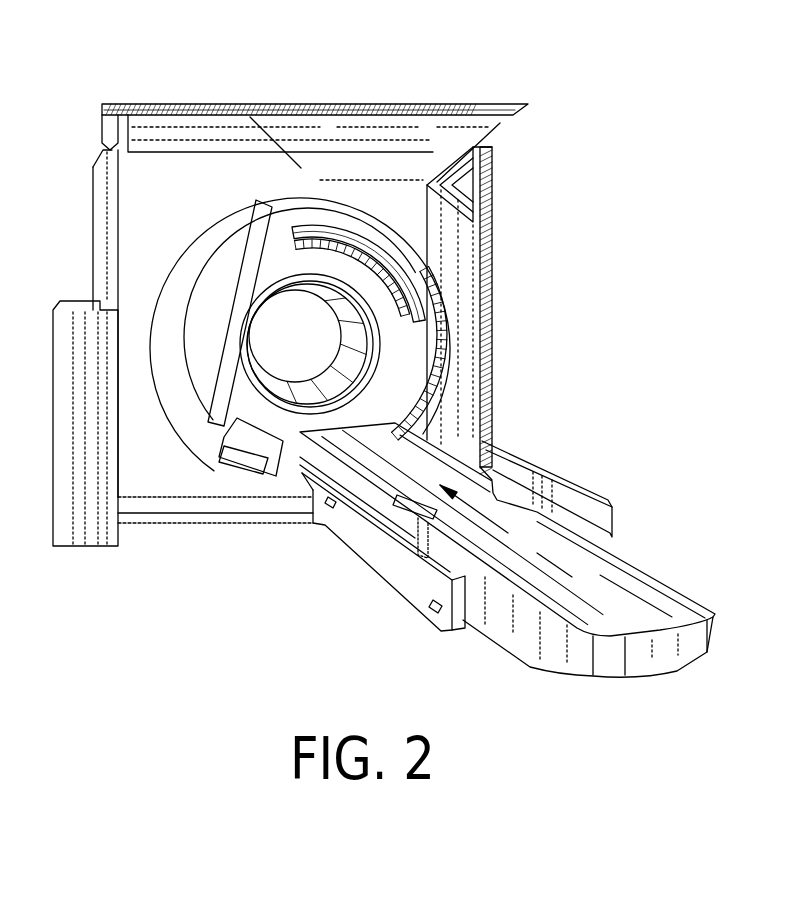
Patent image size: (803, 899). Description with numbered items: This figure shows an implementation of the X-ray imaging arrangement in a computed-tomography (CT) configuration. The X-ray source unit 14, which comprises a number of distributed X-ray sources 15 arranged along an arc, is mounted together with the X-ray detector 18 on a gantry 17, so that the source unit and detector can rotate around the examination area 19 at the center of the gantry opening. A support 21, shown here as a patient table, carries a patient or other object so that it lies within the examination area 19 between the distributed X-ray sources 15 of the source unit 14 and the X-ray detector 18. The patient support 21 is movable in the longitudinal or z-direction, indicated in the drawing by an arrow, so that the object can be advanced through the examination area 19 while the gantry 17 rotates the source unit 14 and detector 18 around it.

The X-ray source unit 14 is at (420, 296).
The distributed X-ray sources 15 is at (318, 236).
The gantry 17 is at (272, 235).
The X-ray detector 18 is at (247, 473).
The examination area 19 is at (303, 352).
The support 21 is at (653, 593).